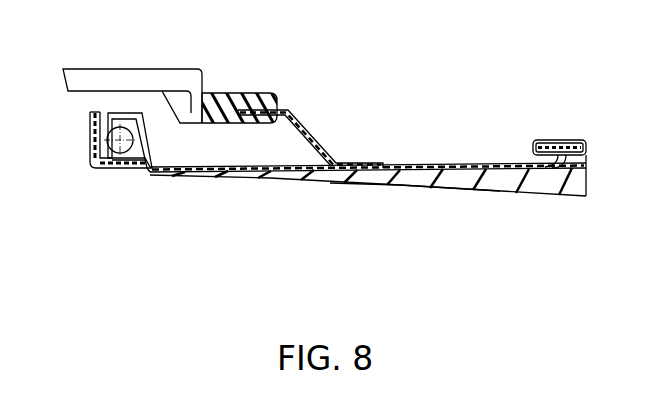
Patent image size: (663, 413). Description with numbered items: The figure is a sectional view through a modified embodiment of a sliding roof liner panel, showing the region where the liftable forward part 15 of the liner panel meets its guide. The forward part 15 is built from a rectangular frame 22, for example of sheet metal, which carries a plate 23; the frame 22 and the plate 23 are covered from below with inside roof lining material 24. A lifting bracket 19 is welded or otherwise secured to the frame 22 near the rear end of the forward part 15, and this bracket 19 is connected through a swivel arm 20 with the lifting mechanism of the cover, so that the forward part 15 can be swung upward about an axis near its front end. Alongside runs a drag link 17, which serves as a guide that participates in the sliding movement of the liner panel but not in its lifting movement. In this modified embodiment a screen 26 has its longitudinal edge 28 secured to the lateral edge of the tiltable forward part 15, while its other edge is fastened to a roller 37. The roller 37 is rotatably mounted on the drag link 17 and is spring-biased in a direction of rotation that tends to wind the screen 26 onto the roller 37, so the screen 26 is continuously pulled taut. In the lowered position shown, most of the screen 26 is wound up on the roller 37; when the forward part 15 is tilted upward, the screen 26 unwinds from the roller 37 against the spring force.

The forward part 15 is at (405, 160).
The drag link 17 is at (92, 152).
The lifting bracket 19 is at (313, 132).
The swivel arm 20 is at (152, 75).
The rectangular frame 22 is at (463, 166).
The plate 23 is at (554, 141).
The inside roof lining material 24 is at (388, 187).
The screen 26 is at (88, 120).
The longitudinal edge 28 is at (127, 120).
The roller 37 is at (130, 170).